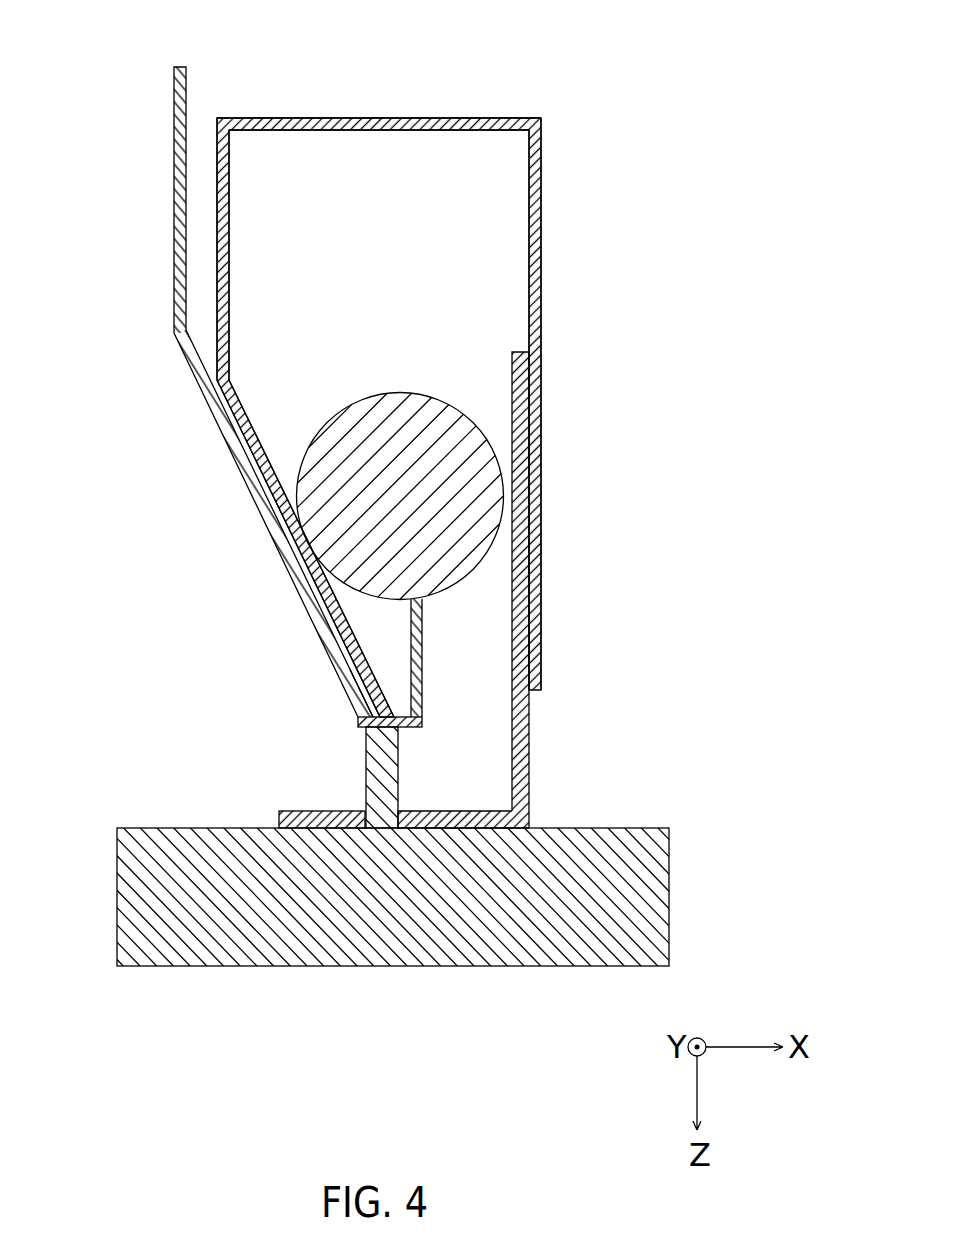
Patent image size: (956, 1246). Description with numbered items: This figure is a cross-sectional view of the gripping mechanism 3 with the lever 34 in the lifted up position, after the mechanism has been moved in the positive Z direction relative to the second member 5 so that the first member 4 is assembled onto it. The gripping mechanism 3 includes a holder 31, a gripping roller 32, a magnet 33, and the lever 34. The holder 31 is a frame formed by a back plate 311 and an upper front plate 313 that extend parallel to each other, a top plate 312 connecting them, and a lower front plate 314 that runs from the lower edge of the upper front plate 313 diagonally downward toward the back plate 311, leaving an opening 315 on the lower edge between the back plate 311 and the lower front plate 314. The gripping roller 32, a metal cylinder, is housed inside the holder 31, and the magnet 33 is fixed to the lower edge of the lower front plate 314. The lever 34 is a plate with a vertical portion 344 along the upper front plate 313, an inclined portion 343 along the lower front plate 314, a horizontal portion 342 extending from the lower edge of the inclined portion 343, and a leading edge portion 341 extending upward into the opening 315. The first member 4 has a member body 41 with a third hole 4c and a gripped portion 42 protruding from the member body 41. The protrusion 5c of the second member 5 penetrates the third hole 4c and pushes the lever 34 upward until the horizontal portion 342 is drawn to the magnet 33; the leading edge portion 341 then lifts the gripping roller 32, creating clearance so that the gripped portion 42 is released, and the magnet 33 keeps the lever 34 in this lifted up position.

The gripping mechanism 3 is at (483, 71).
The holder 31 is at (608, 158).
The back plate 311 is at (541, 285).
The top plate 312 is at (367, 118).
The upper front plate 313 is at (230, 222).
The lower front plate 314 is at (232, 412).
The opening 315 is at (474, 707).
The gripping roller 32 is at (398, 393).
The magnet 33 is at (359, 685).
The lever 34 is at (120, 162).
The leading edge portion 341 is at (422, 672).
The horizontal portion 342 is at (421, 728).
The inclined portion 343 is at (255, 502).
The vertical portion 344 is at (174, 237).
The first member 4 is at (580, 684).
The member body 41 is at (459, 811).
The gripped portion 42 is at (530, 785).
The third hole 4c is at (362, 810).
The second member 5 is at (670, 874).
The protrusion 5c is at (365, 766).